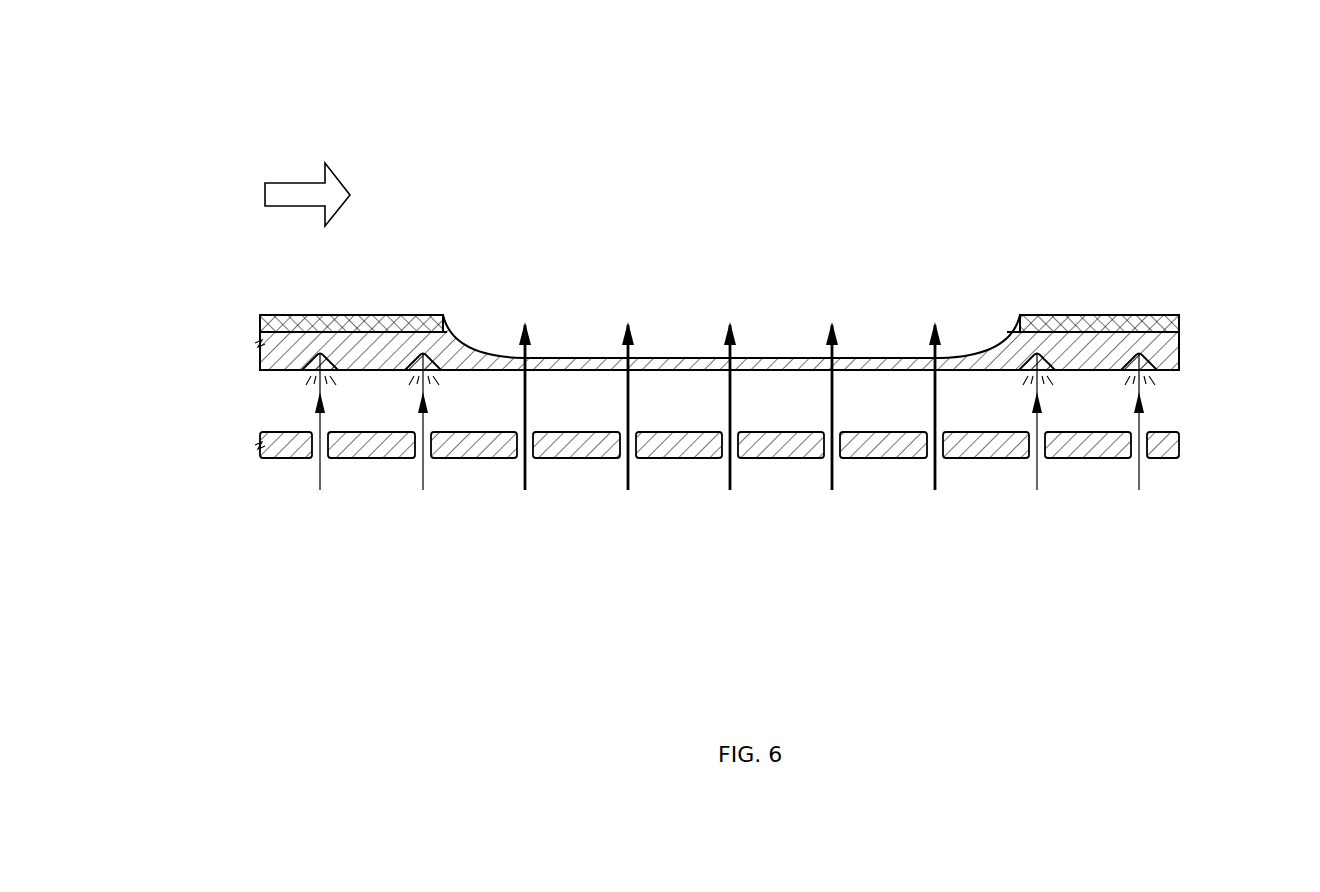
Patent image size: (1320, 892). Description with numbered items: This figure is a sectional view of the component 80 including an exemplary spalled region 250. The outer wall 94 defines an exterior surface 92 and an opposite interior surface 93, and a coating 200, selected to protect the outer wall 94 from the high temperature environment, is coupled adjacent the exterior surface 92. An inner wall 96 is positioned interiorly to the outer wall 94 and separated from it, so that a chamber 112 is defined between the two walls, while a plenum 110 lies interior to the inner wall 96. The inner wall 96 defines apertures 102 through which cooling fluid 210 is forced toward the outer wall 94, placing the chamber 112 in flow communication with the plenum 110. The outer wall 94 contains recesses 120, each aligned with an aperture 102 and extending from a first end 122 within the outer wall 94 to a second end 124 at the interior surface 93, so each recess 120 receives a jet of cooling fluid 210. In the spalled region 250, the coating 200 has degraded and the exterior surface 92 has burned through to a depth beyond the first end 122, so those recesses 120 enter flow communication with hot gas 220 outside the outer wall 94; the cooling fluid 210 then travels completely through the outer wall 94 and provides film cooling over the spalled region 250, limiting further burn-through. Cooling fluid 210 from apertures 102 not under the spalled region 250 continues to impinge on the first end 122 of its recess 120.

The component 80 is at (1027, 546).
The exterior surface 92 is at (1065, 330).
The interior surface 93 is at (1079, 372).
The outer wall 94 is at (698, 376).
The inner wall 96 is at (1180, 445).
The apertures 102 is at (293, 508).
The plenum 110 is at (742, 578).
The chamber 112 is at (705, 414).
The recesses 120 is at (328, 378).
The first end 122 is at (300, 354).
The second end 124 is at (285, 386).
The coating 200 is at (1180, 336).
The cooling fluid 210 is at (525, 420).
The hot gas 220 is at (296, 183).
The spalled region 250 is at (950, 207).